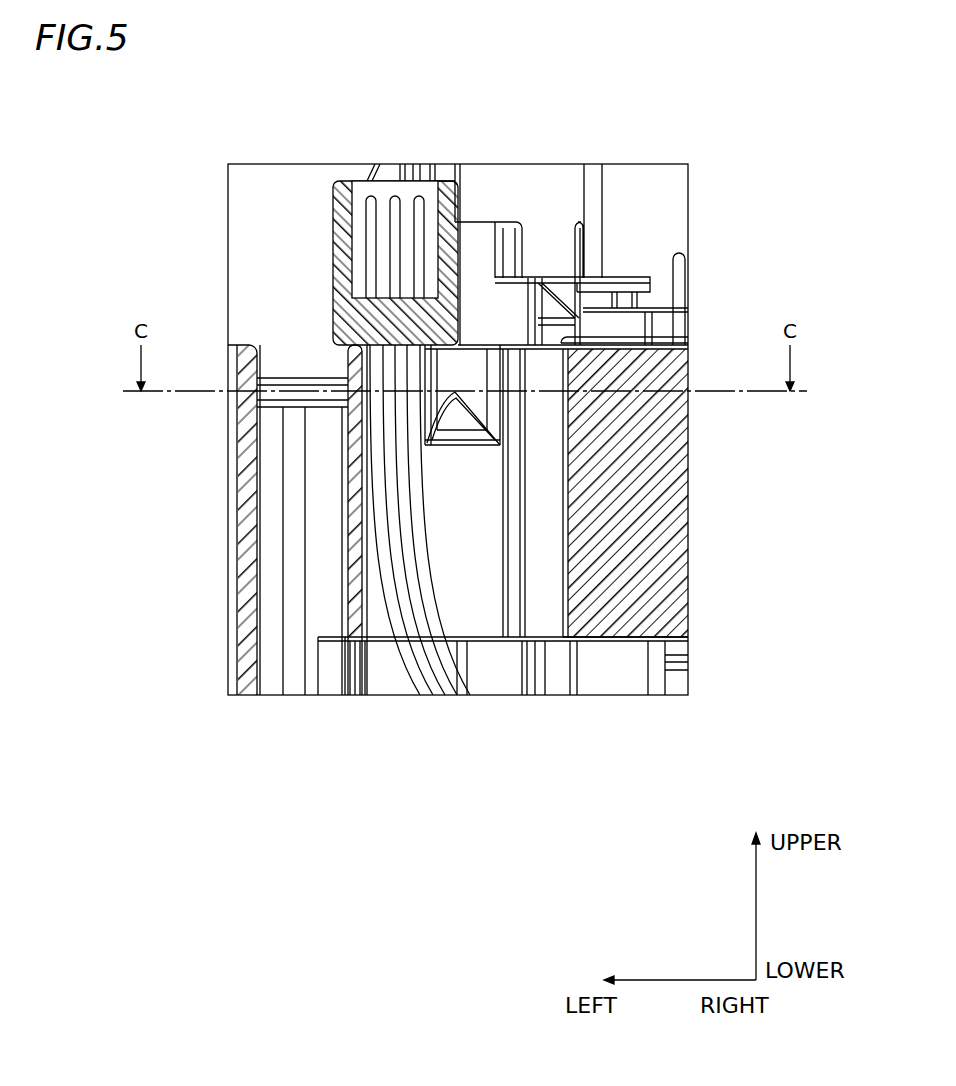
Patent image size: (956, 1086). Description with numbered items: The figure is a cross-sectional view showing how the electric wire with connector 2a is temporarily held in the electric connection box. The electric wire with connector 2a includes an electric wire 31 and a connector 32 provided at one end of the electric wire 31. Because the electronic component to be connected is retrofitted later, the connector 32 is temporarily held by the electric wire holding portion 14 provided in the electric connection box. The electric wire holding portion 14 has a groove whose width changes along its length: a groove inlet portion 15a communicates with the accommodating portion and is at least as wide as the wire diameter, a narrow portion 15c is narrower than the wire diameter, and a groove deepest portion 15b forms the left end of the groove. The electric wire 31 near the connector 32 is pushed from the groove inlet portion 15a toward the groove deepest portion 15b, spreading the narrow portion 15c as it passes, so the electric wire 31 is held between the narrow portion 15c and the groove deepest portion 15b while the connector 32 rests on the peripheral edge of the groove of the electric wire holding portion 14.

The electric wire holding portion 14 is at (437, 347).
The electric wire with connector 2a is at (251, 438).
The connector 32 is at (338, 250).
The electric wire 31 is at (380, 517).
The groove deepest portion 15b is at (370, 438).
The narrow portion 15c is at (458, 407).
The groove inlet portion 15a is at (542, 475).